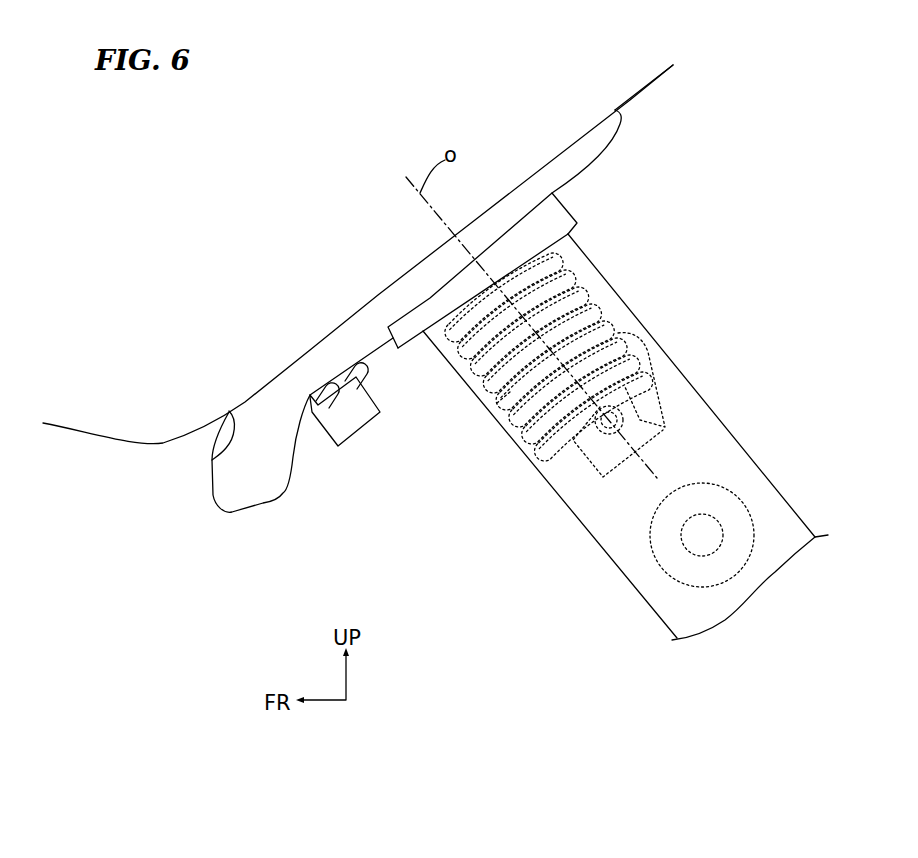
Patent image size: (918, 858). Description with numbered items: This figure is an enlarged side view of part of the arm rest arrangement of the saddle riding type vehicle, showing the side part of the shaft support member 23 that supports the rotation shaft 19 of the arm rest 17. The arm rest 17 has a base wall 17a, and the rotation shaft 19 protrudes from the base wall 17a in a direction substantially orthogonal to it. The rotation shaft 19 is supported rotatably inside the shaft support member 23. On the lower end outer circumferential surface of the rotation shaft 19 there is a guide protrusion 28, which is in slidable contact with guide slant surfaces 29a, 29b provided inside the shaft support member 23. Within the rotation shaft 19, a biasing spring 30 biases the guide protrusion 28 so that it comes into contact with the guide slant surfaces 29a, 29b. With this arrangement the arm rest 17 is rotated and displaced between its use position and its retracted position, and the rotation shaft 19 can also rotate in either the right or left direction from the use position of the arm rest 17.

The arm rest 17 is at (636, 103).
The base wall 17a is at (215, 455).
The rotation shaft 19 is at (563, 290).
The shaft support member 23 is at (737, 432).
The guide protrusion 28 is at (622, 408).
The guide slant surface 29a is at (590, 452).
The guide slant surface 29b is at (637, 356).
The biasing spring 30 is at (497, 403).